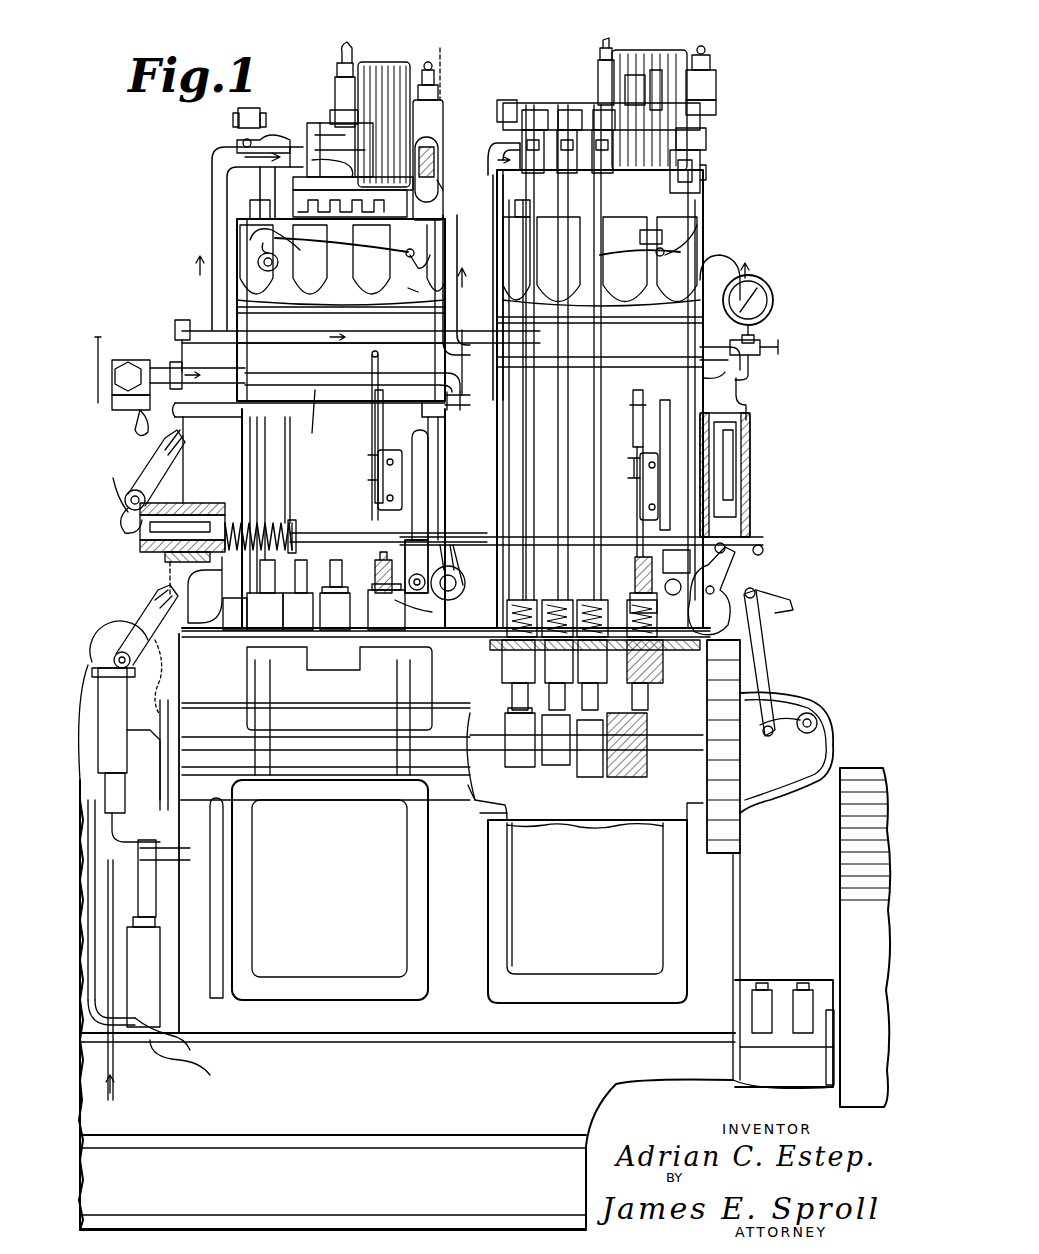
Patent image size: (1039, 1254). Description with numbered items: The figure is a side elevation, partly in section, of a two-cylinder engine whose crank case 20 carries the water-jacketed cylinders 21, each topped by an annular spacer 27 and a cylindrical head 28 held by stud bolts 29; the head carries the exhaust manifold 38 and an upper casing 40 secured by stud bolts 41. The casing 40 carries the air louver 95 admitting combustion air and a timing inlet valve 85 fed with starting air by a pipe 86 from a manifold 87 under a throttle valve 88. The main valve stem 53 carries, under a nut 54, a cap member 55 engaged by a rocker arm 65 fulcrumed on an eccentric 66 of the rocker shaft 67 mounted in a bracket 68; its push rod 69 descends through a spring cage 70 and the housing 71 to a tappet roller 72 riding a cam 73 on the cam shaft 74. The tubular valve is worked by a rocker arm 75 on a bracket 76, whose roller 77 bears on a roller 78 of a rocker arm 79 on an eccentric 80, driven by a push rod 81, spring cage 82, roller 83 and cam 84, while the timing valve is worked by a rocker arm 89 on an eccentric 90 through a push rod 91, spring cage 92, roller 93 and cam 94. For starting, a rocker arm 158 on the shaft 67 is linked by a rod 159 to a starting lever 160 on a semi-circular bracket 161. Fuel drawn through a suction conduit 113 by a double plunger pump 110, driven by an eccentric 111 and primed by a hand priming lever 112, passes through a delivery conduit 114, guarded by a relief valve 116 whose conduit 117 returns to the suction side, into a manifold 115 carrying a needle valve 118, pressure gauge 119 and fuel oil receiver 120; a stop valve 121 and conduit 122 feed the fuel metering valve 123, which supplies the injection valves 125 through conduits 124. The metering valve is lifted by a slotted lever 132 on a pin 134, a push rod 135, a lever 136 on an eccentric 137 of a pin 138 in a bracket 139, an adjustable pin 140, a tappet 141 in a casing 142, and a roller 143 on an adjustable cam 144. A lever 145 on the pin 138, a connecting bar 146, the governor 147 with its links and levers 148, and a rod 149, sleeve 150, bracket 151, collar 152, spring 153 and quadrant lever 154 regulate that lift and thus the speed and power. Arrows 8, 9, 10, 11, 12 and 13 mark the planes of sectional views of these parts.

The valve 8 is at (417, 38).
The section arrow 9 is at (580, 89).
The section line 10 is at (528, 805).
The section line 11 is at (563, 805).
The section line 12 is at (594, 805).
The section line 13 is at (649, 805).
The base or crank case 20 is at (484, 929).
The water jacketed engine cylinder 21 is at (243, 473).
The annular water-jacketed spacer 27 is at (243, 326).
The cylinder head 28 is at (252, 245).
The stud bolts 29 is at (250, 209).
The exhaust manifold 38 is at (140, 420).
The upper casing 40 is at (293, 185).
The stud bolts 41 is at (454, 176).
The operating stem 53 is at (345, 48).
The nut 54 is at (337, 68).
The elongated cap member 55 is at (337, 95).
The rocker arm 65 is at (332, 117).
The eccentric 66 is at (633, 75).
The rocker shaft 67 is at (700, 135).
The bracket 68 is at (344, 212).
The push rod 69 is at (335, 575).
The spring cage 70 is at (333, 630).
The housing 71 is at (502, 660).
The tappet roller 72 is at (604, 761).
The cam 73 is at (588, 803).
The cam shaft 74 is at (470, 795).
The rocker arm 75 is at (264, 140).
The bracket 76 is at (262, 173).
The roller 77 is at (240, 148).
The roller 78 is at (249, 108).
The rocker arm 79 is at (236, 112).
The eccentric 80 is at (522, 110).
The push rod 81 is at (260, 580).
The spring cage 82 is at (262, 620).
The roller 83 is at (495, 712).
The cam 84 is at (517, 762).
The timing inlet valve 85 is at (310, 165).
The pipe 86 is at (212, 251).
The manifold 87 is at (309, 421).
The throttle valve 88 is at (128, 360).
The rocker arm 89 is at (596, 112).
The eccentric 90 is at (565, 110).
The push rod 91 is at (302, 572).
The spring cage 92 is at (296, 630).
The roller 93 is at (555, 756).
The cam 94 is at (570, 793).
The air louver or intake 95 is at (375, 62).
The double plunger pump 110 is at (150, 1050).
The eccentric 111 is at (168, 795).
The hand priming lever 112 is at (223, 876).
The common suction conduit 113 is at (113, 1100).
The common delivery conduit 114 is at (175, 333).
The manifold 115 is at (203, 413).
The fuel relief valve 116 is at (80, 700).
The conduit 117 is at (135, 915).
The needle valve 118 is at (760, 342).
The pressure gauge 119 is at (775, 300).
The fuel oil receiver 120 is at (750, 485).
The combination T and fuel stop valve 121 is at (453, 396).
The conduit 122 is at (440, 285).
The fuel metering valve 123 is at (430, 95).
The conduits 124 is at (352, 265).
The fuel injection valves 125 is at (258, 262).
The slotted lever 132 is at (442, 160).
The pin 134 is at (706, 172).
The push rod 135 is at (420, 498).
The lever 136 is at (534, 593).
The eccentric 137 is at (441, 600).
The pin 138 is at (458, 612).
The bracket 139 is at (432, 615).
The adjustable pin 140 is at (378, 557).
The reciprocative tappet 141 is at (650, 685).
The casing 142 is at (378, 631).
The roller 143 is at (650, 740).
The cam 144 is at (634, 790).
The lever 145 is at (462, 530).
The connecting bar 146 is at (490, 548).
The engine governor 147 is at (775, 698).
The system of links and levers 148 is at (804, 612).
The rod 149 is at (308, 533).
The sleeve 150 is at (142, 552).
The bracket 151 is at (170, 562).
The collar 152 is at (288, 523).
The compression spring 153 is at (240, 523).
The quadrant lever 154 is at (152, 478).
The rocker arm 158 is at (658, 70).
The rod 159 is at (370, 354).
The starting lever 160 is at (372, 420).
The semi-circular bracket 161 is at (378, 485).